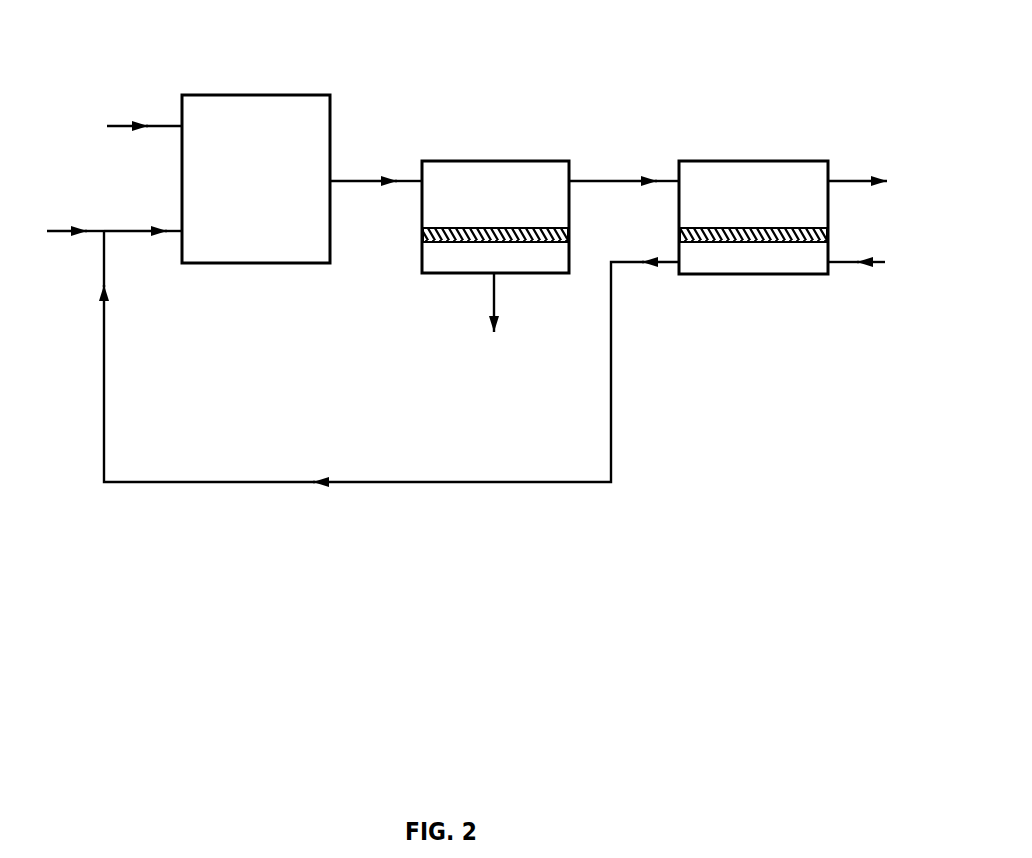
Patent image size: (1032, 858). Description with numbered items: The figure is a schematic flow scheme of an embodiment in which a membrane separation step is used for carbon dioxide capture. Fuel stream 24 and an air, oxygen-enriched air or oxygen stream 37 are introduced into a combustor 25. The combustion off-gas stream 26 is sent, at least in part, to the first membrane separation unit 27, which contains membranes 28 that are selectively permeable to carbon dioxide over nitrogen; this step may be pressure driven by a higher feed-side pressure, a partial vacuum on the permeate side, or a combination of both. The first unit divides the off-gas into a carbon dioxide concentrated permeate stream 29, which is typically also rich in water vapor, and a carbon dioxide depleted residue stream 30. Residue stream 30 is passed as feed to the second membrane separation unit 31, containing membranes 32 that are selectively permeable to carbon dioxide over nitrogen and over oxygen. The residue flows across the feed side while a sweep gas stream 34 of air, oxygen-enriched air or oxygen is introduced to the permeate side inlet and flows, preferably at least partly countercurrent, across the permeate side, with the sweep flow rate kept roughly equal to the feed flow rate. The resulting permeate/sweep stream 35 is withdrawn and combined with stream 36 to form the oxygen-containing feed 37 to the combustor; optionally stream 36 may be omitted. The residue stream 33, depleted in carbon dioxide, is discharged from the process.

The fuel stream 24 is at (133, 112).
The combustor 25 is at (217, 95).
The combustion off-gas stream 26 is at (376, 166).
The first membrane separation unit 27 is at (530, 161).
The membranes 28 is at (467, 228).
The carbon dioxide concentrated permeate stream 29 is at (494, 317).
The carbon dioxide depleted residue stream 30 is at (624, 166).
The second membrane separation unit 31 is at (792, 161).
The membranes 32 is at (737, 228).
The residue stream 33 is at (870, 182).
The sweep gas stream 34 is at (869, 262).
The permeate/sweep stream 35 is at (391, 356).
The oxygen-containing stream 36 is at (69, 216).
The air, oxygen-enriched air or oxygen stream 37 is at (143, 216).